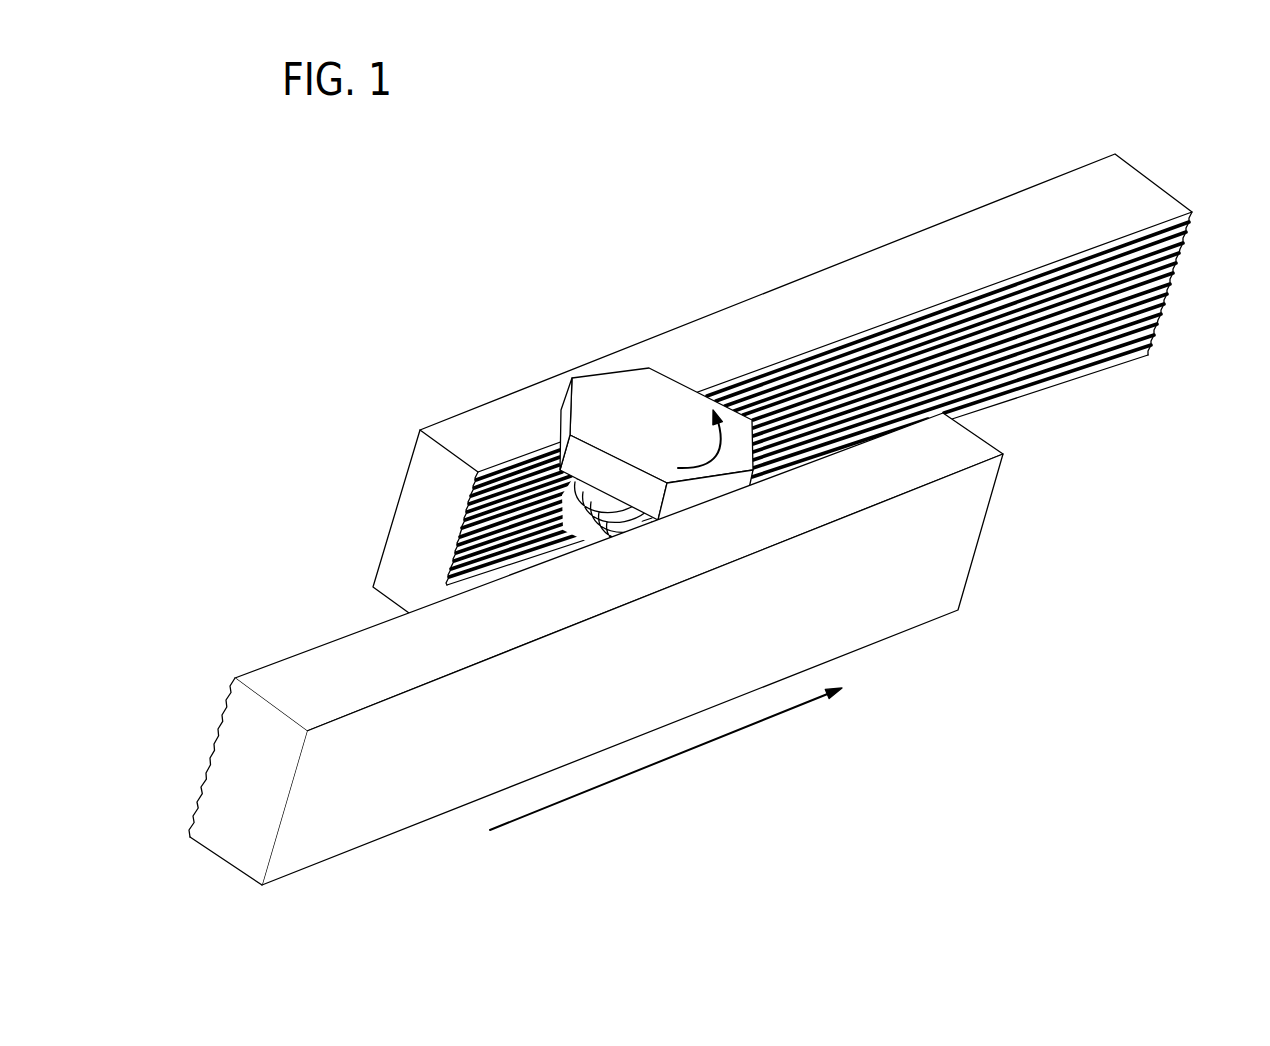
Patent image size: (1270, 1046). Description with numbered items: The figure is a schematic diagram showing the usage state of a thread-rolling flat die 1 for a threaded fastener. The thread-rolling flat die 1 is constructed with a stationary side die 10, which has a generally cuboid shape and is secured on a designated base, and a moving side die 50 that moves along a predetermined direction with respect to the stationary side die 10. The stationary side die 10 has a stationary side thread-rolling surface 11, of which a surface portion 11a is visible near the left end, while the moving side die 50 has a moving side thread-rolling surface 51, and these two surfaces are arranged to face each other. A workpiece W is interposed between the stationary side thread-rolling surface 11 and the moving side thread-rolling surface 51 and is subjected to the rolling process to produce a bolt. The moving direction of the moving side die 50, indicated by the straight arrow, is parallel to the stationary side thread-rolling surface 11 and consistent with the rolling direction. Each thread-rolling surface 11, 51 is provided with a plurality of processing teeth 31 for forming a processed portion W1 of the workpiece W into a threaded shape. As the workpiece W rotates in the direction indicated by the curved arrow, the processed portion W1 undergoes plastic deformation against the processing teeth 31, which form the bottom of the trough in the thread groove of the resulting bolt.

The thread-rolling flat die 1 is at (1004, 678).
The stationary side die 10 is at (760, 383).
The stationary side thread-rolling surface 11 is at (1098, 417).
The tooth tip 11a is at (460, 518).
The processing teeth 31 is at (1033, 380).
The moving side die 50 is at (561, 649).
The moving side thread-rolling surface 51 is at (213, 751).
The workpiece W is at (536, 400).
The processed portion W1 is at (567, 513).